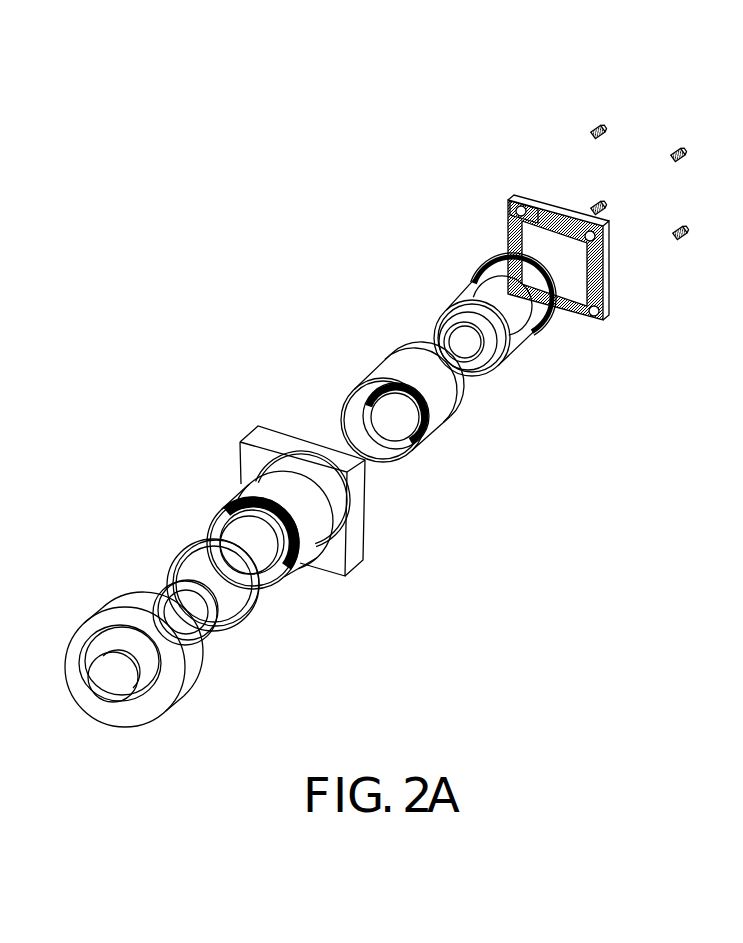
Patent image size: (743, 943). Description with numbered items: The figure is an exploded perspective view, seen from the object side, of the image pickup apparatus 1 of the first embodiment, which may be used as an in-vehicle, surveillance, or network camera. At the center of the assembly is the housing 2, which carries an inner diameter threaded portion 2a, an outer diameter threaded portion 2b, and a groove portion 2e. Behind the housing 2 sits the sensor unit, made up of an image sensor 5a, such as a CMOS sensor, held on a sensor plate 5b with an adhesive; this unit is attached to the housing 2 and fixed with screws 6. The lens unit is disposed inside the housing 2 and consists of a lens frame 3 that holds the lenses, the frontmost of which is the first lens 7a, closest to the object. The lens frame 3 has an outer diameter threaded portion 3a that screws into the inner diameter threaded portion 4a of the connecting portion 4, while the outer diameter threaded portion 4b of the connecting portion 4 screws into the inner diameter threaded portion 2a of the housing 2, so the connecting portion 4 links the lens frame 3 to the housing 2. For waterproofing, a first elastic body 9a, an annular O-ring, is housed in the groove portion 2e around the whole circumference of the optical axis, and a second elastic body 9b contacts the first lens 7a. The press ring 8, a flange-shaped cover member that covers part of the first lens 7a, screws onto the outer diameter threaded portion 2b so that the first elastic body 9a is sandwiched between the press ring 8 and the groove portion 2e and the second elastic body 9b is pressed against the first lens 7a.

The image pickup apparatus 1 is at (125, 115).
The housing 2 is at (240, 481).
The inner diameter threaded portion 2a is at (265, 582).
The outer diameter threaded portion 2b is at (228, 493).
The groove portion 2e is at (258, 493).
The lens frame 3 is at (458, 282).
The outer diameter threaded portion 3a is at (487, 267).
The connecting portion 4 is at (370, 359).
The inner diameter threaded portion 4a is at (372, 388).
The outer diameter threaded portion 4b is at (369, 377).
The image sensor 5a is at (520, 257).
The sensor plate 5b is at (528, 220).
The screws 6 is at (673, 232).
The first lens 7a is at (457, 340).
The press ring 8 is at (107, 615).
The first elastic body 9a is at (198, 537).
The second elastic body 9b is at (172, 588).